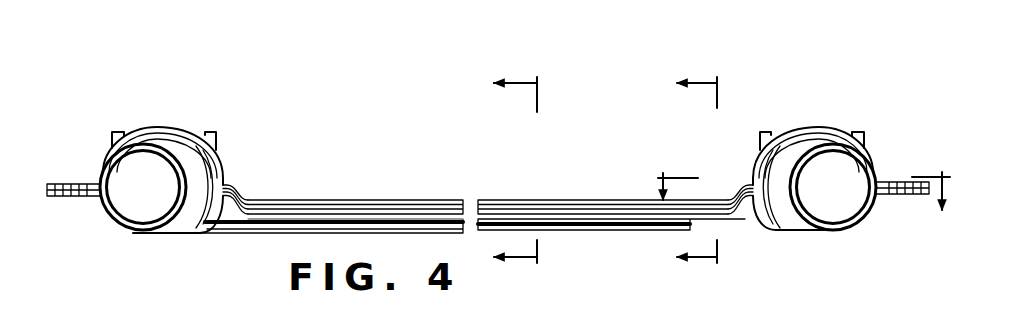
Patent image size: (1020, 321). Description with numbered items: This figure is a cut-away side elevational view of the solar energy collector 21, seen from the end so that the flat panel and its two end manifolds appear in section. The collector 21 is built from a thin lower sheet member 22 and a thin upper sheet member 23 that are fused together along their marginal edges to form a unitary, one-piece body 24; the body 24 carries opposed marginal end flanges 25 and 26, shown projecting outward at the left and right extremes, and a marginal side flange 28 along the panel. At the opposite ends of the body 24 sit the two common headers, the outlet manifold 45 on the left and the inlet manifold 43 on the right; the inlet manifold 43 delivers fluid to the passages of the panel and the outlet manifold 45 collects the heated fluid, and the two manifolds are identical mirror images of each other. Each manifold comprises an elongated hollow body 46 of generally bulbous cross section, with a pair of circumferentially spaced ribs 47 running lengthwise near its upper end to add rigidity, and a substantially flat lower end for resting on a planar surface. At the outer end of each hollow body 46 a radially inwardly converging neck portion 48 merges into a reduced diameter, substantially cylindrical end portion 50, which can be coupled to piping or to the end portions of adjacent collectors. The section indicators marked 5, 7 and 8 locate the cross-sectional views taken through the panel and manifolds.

The solar energy collector 21 is at (232, 241).
The lower sheet member 22 is at (275, 235).
The upper sheet member 23 is at (405, 201).
The body 24 is at (300, 196).
The marginal end flange 25 is at (72, 183).
The marginal end flange 26 is at (890, 181).
The marginal side flange 28 is at (592, 214).
The inlet manifold 43 is at (813, 108).
The outlet manifold 45 is at (148, 119).
The hollow body 46 is at (172, 131).
The ribs 47 is at (116, 131).
The neck portion 48 is at (214, 162).
The end portion 50 is at (110, 223).
The section line 5- 5 is at (793, 178).
The section line 7- 7 is at (710, 172).
The section line 8- 8 is at (527, 172).